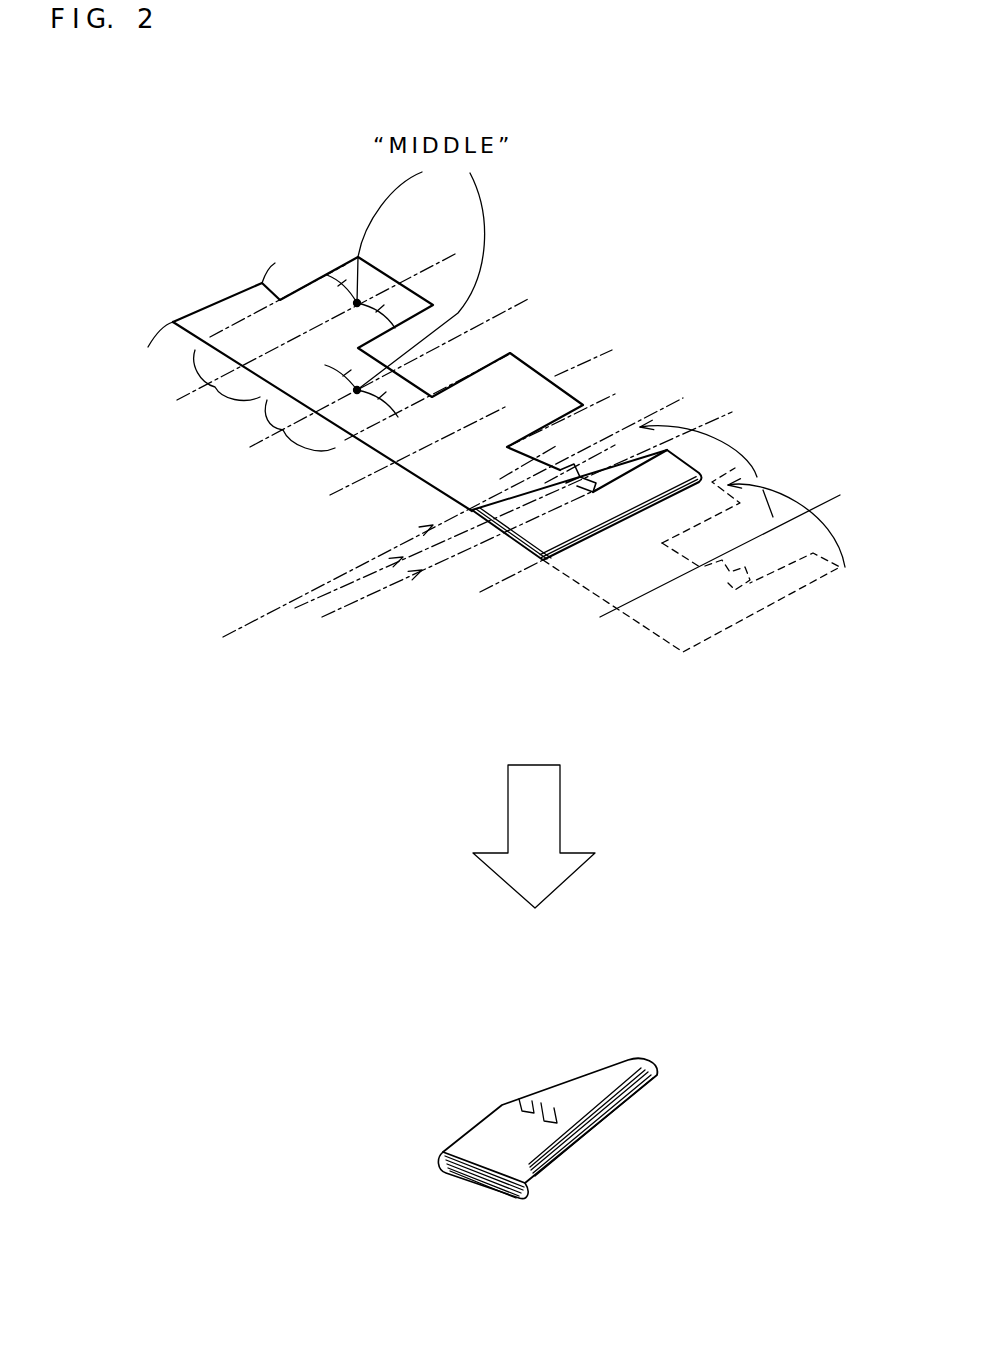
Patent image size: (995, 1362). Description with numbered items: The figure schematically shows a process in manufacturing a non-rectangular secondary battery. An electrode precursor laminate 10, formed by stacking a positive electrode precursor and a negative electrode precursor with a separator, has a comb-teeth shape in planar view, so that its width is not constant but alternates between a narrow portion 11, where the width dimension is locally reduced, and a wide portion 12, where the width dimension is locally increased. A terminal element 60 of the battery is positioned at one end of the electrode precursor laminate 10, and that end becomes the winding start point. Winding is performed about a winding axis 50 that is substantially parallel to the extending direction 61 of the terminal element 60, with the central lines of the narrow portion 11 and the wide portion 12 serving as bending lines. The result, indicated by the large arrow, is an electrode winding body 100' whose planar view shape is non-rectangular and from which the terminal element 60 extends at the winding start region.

The electrode precursor laminate 10 is at (555, 318).
The narrow portion 11 is at (299, 442).
The wide portion 12 is at (225, 391).
The winding axis 50 is at (550, 643).
The terminal element 60 is at (574, 468).
The extending direction 61 is at (725, 372).
The electrode winding body 100' is at (628, 1171).